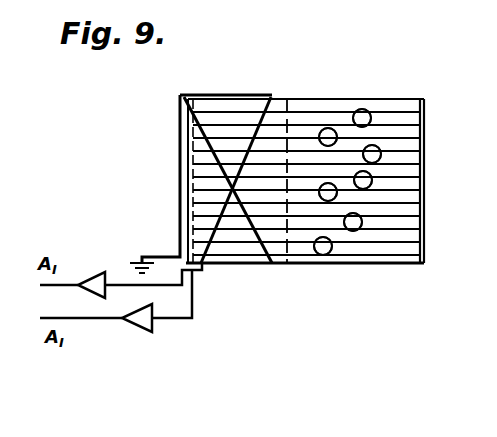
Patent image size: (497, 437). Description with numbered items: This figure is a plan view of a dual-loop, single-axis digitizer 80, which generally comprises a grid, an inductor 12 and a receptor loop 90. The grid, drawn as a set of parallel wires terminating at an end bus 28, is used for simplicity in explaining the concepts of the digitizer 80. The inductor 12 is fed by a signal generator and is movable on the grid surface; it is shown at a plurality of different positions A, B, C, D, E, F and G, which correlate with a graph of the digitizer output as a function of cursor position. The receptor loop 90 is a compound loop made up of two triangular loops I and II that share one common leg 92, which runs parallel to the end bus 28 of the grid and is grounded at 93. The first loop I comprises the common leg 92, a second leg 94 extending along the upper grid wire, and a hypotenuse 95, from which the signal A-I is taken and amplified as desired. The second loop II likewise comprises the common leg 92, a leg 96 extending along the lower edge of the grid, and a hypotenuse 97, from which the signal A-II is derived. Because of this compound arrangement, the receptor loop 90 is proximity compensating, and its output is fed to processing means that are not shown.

The receptor loop 90 is at (186, 78).
The common leg 92 is at (181, 105).
The second leg 94 is at (212, 93).
The hypotenuse 97 is at (191, 143).
The end bus 28 is at (188, 212).
The ground 93 is at (126, 258).
The hypotenuse 95 is at (265, 118).
The leg 96 is at (236, 273).
The digitizer 80 is at (323, 83).
The inductor 12 is at (366, 108).
The first loop I is at (240, 92).
The second loop II is at (266, 272).
The inductor position A is at (355, 109).
The inductor position B is at (337, 136).
The inductor position C is at (381, 156).
The inductor position D is at (372, 179).
The inductor position E is at (337, 194).
The inductor position F is at (362, 224).
The inductor position G is at (331, 252).